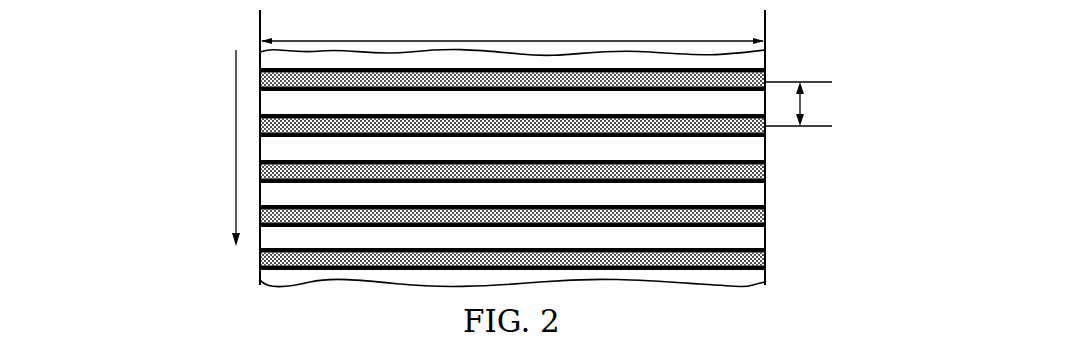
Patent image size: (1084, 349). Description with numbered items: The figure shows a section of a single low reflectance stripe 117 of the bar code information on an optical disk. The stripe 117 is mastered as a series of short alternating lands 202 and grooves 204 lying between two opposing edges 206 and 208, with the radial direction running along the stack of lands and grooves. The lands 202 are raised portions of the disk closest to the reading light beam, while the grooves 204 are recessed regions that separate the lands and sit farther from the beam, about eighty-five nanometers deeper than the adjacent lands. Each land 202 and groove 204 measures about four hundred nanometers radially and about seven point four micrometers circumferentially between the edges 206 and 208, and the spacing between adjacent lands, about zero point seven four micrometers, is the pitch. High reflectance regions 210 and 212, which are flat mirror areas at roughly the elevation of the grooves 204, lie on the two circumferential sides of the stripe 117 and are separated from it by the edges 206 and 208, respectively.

The low reflectance stripe 117 is at (256, 255).
The land 202 is at (757, 213).
The groove 204 is at (757, 192).
The edge 206 is at (259, 17).
The edge 208 is at (766, 17).
The high reflectance region 210 is at (163, 192).
The high reflectance region 212 is at (867, 160).